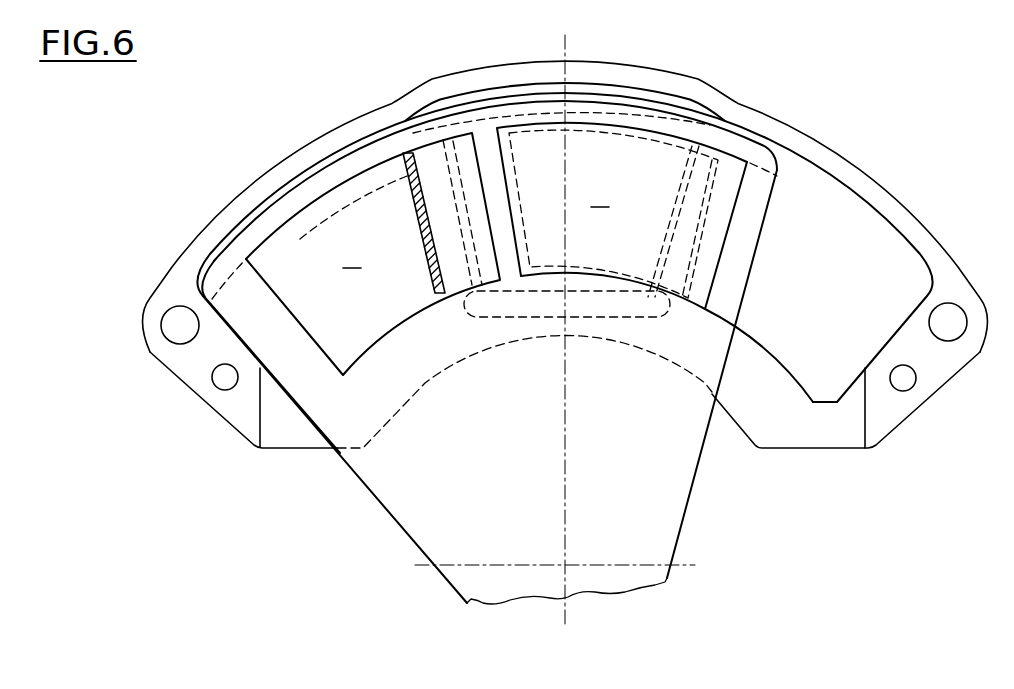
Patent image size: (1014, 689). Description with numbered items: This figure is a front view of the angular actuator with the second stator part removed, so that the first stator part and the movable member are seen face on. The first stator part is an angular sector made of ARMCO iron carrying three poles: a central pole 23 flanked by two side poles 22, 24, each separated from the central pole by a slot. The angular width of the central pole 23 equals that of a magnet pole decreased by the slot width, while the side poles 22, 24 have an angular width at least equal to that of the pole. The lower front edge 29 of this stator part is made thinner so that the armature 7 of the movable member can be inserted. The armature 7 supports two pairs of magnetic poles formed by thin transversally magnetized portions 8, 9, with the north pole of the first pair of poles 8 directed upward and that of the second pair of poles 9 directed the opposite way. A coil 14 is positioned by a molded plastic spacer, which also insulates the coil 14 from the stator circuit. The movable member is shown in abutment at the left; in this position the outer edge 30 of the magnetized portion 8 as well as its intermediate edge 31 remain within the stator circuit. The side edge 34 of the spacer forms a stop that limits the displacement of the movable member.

The armature 7 is at (237, 300).
The first pair of poles 8 is at (373, 254).
The second pair of poles 9 is at (595, 211).
The coil 14 is at (538, 307).
The side pole 22 is at (363, 203).
The central pole 23 is at (648, 153).
The side pole 24 is at (832, 250).
The front edge 29 is at (421, 358).
The outer edge 30 is at (262, 280).
The intermediate edge 31 is at (478, 173).
The side edge 34 is at (190, 368).